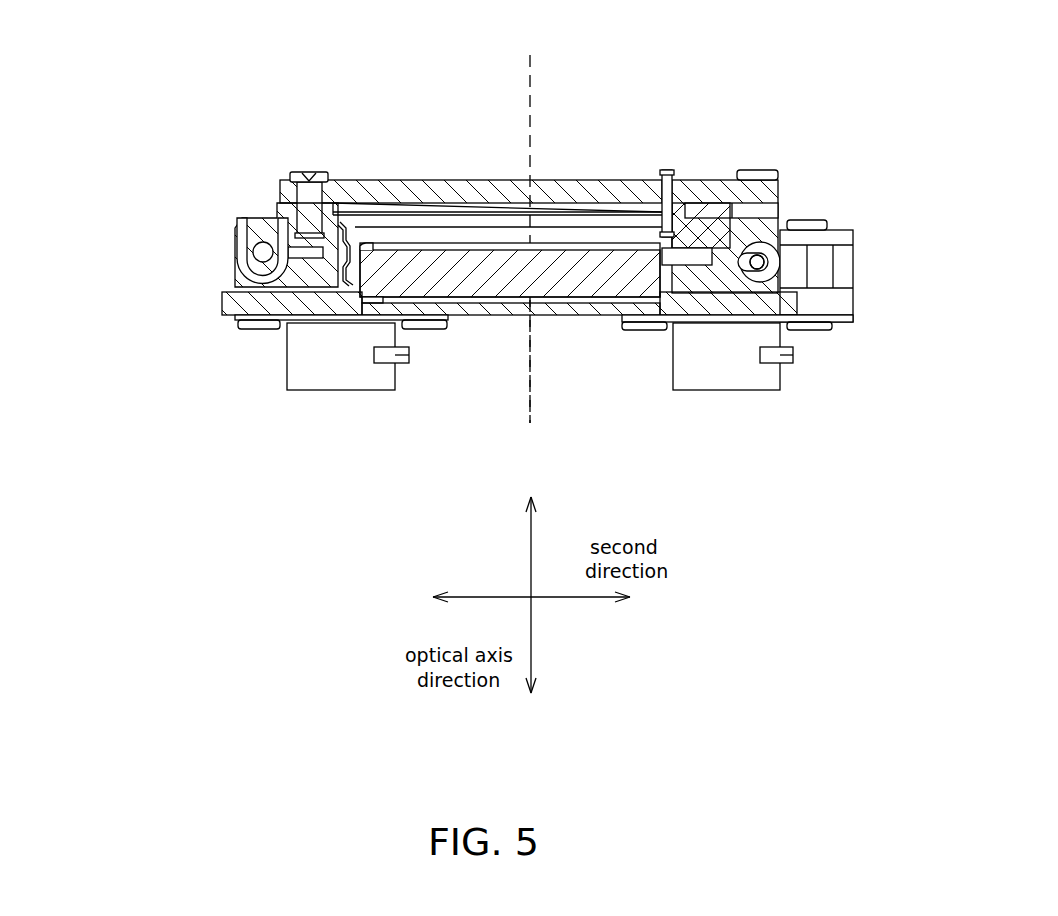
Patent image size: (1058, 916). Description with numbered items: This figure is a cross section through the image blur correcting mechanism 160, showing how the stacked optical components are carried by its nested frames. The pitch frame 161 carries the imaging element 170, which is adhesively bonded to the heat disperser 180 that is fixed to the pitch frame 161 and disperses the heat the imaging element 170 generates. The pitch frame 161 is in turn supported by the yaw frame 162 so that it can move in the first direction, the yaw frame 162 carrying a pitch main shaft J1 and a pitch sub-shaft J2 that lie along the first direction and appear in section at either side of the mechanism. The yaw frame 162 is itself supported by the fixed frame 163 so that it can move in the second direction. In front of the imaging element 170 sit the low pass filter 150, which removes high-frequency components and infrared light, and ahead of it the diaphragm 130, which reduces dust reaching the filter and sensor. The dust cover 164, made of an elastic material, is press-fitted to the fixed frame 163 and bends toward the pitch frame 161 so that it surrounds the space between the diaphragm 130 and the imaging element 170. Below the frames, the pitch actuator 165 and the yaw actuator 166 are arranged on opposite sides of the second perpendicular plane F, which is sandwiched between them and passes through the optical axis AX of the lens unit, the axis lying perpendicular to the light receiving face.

The diaphragm 130 is at (610, 316).
The low pass filter 150 is at (570, 250).
The image blur correcting mechanism 160 is at (128, 208).
The pitch frame 161 is at (238, 222).
The yaw frame 162 is at (237, 267).
The fixed frame 163 is at (233, 310).
The dust cover 164 is at (353, 277).
The pitch actuator 165 is at (348, 378).
The yaw actuator 166 is at (730, 378).
The imaging element 170 is at (640, 203).
The heat disperser 180 is at (716, 180).
The second perpendicular plane F is at (528, 76).
The optical axis AX is at (530, 405).
The pitch main shaft J1 is at (263, 242).
The pitch sub-shaft J2 is at (764, 260).